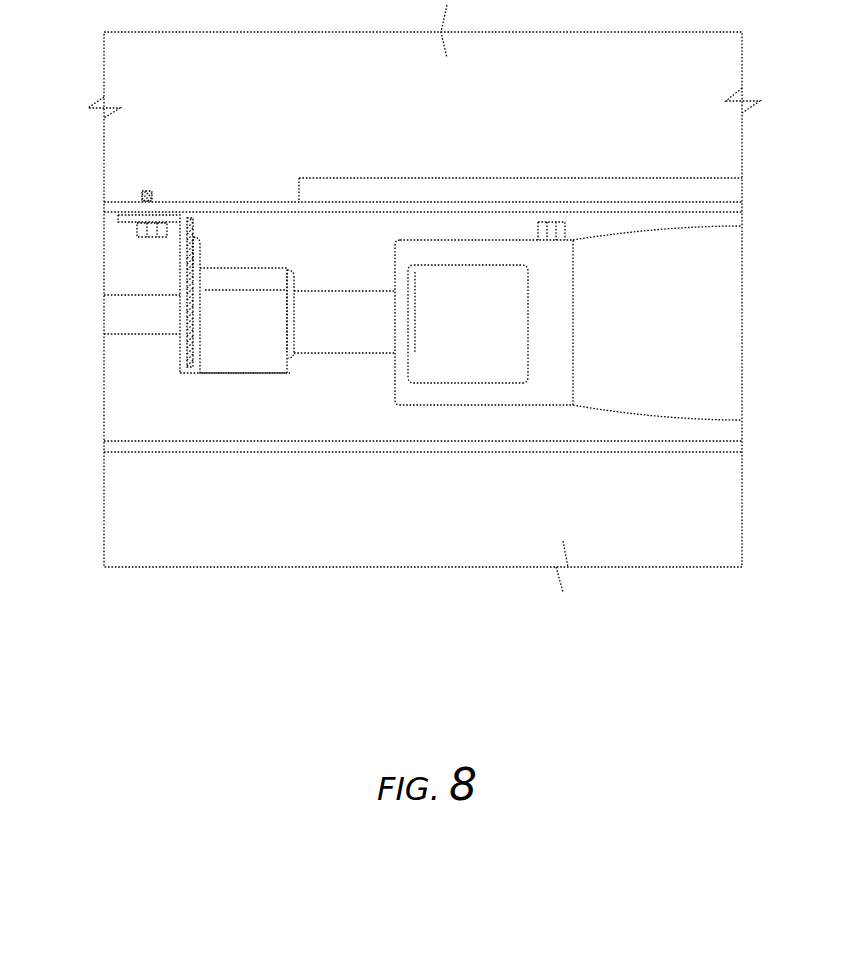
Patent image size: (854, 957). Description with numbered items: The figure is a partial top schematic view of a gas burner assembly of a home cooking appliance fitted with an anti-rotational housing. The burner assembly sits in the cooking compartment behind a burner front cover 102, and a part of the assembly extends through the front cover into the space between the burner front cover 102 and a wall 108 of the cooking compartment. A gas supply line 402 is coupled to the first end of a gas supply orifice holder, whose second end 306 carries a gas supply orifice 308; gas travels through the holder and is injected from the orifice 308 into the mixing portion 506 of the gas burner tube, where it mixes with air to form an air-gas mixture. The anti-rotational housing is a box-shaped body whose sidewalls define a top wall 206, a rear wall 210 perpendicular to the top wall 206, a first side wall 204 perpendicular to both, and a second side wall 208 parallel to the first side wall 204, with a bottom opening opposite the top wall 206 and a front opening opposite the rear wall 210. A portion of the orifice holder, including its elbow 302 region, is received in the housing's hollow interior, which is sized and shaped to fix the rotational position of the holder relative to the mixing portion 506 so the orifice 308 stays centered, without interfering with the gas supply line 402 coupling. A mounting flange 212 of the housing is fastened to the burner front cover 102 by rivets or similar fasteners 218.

The burner front cover 102 is at (239, 199).
The wall of the cooking compartment 108 is at (397, 455).
The first side wall 204 is at (232, 268).
The top wall 206 is at (248, 360).
The second side wall 208 is at (210, 374).
The rear wall 210 is at (177, 350).
The mounting flange 212 is at (112, 220).
The fasteners 218 is at (147, 191).
The side wall 302 is at (297, 272).
The second end of the gas supply orifice holder 306 is at (385, 290).
The gas supply orifice 308 is at (418, 350).
The gas supply line 402 is at (100, 307).
The mixing portion 506 is at (395, 385).